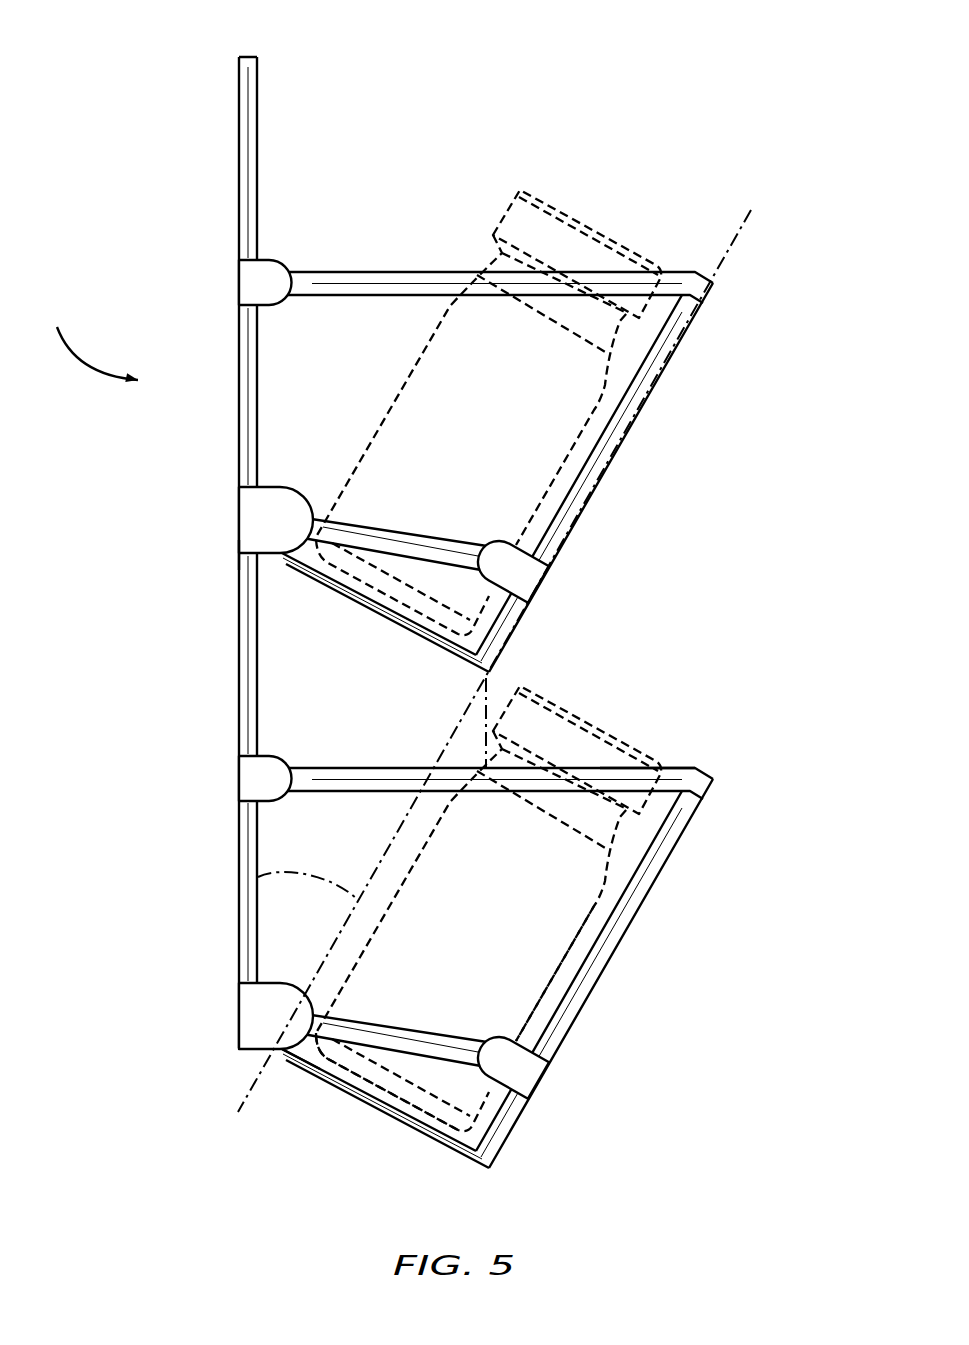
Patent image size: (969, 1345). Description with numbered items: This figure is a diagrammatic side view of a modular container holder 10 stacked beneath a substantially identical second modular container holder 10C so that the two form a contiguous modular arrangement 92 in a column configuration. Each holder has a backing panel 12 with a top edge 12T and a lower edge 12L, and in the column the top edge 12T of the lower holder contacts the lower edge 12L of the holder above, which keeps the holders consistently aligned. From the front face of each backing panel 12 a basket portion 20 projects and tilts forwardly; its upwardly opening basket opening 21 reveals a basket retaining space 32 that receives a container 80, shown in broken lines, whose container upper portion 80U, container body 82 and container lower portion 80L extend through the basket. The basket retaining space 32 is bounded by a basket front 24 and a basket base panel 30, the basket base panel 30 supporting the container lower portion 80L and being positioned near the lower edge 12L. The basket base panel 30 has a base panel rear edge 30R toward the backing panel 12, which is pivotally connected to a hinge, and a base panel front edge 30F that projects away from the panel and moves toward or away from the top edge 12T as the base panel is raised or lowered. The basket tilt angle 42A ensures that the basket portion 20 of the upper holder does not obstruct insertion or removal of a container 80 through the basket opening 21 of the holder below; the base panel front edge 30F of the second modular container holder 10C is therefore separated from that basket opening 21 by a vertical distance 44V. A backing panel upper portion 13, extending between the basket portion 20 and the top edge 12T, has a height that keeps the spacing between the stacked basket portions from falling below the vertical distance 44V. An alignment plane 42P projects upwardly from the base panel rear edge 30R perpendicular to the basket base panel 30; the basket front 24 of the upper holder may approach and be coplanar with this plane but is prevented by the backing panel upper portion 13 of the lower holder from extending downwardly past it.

The modular container holder 10 is at (505, 986).
The second modular container holder 10C is at (627, 458).
The backing panel 12 is at (257, 53).
The lower edge 12L is at (238, 555).
The top edge 12T is at (238, 558).
The backing panel upper portion 13 is at (247, 657).
The basket portion 20 is at (715, 283).
The basket opening 21 is at (675, 767).
The basket front 24 is at (652, 880).
The basket base panel 30 is at (422, 1130).
The base panel front edge 30F is at (490, 668).
The base panel rear edge 30R is at (280, 1053).
The basket retaining space 32 is at (576, 958).
The basket tilt angle 42A is at (295, 877).
The alignment plane 42P is at (460, 718).
The vertical distance 44V is at (487, 698).
The container 80 is at (615, 755).
The container upper portion 80U is at (593, 723).
The container lower portion 80L is at (407, 1105).
The container body 82 is at (525, 982).
The contiguous modular arrangement 92 is at (88, 340).